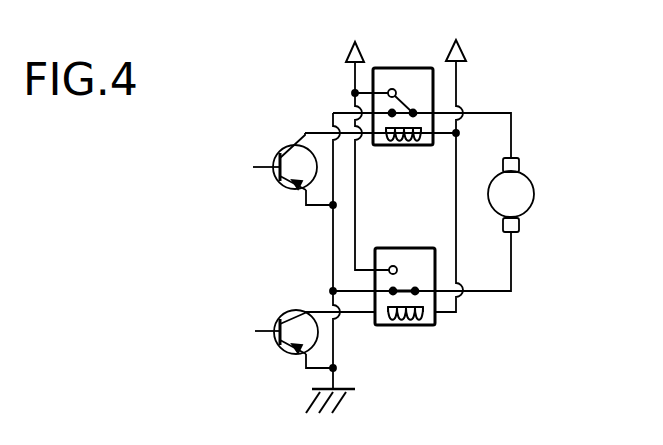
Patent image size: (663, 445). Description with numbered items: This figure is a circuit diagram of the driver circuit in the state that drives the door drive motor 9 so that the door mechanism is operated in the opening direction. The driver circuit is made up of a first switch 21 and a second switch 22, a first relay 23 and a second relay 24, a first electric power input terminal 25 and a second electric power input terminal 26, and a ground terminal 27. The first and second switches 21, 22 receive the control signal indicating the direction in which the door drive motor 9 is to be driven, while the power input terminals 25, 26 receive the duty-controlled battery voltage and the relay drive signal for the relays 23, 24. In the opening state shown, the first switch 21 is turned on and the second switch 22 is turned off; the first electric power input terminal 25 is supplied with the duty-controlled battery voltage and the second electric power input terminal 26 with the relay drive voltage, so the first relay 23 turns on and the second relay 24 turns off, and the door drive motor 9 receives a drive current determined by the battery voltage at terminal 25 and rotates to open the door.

The door drive motor 9 is at (535, 190).
The first switch 21 is at (290, 144).
The second switch 22 is at (290, 310).
The first relay 23 is at (403, 67).
The second relay 24 is at (407, 247).
The first electric power input terminal 25 is at (345, 50).
The second electric power input terminal 26 is at (467, 52).
The ground terminal 27 is at (348, 398).